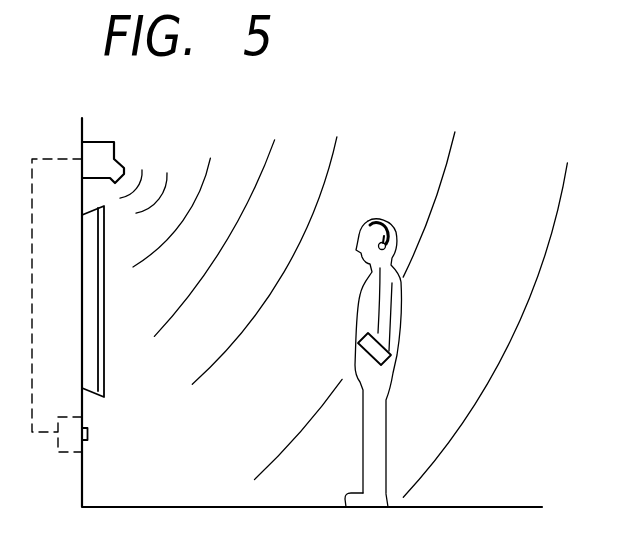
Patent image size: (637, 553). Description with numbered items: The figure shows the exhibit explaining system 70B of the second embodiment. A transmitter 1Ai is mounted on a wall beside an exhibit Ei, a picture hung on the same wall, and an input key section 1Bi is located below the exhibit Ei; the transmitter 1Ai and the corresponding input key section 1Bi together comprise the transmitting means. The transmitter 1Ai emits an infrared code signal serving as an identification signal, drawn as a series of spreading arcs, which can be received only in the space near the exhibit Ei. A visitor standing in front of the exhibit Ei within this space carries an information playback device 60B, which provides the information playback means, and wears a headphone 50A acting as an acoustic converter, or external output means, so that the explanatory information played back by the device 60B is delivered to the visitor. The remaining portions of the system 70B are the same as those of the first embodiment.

The transmitter 1Ai is at (106, 154).
The exhibit Ei is at (97, 363).
The input key section 1Bi is at (82, 448).
The exhibit explaining system 70B is at (494, 207).
The headphone 50A is at (376, 223).
The information playback device 60B is at (391, 359).